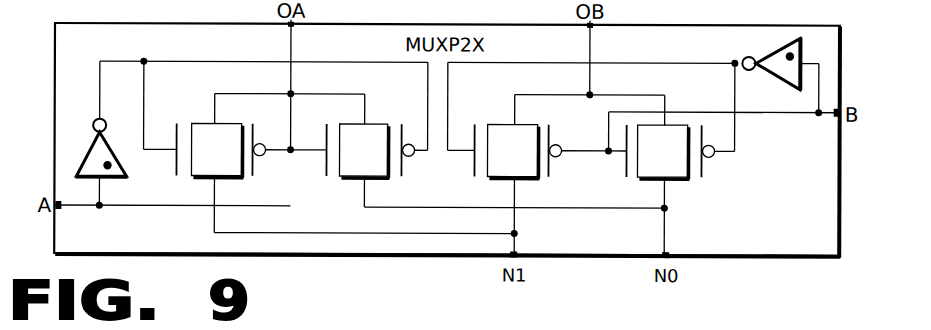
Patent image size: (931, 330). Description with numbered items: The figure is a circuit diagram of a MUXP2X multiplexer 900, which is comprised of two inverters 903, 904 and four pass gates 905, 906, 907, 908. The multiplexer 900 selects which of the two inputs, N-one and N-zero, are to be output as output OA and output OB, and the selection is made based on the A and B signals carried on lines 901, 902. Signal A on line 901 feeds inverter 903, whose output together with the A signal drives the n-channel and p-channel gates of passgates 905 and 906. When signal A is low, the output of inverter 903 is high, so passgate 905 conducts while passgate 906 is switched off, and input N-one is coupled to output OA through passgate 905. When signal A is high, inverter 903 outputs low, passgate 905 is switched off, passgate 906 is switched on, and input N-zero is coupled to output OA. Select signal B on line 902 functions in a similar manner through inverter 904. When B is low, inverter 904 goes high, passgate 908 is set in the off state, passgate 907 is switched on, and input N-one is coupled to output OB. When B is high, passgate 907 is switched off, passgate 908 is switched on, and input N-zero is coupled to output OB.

The MUXP2X multiplexer 900 is at (799, 249).
The line 901 is at (75, 207).
The line 902 is at (829, 114).
The inverter 903 is at (92, 137).
The inverter 904 is at (774, 50).
The passgate 905 is at (203, 158).
The passgate 906 is at (350, 158).
The passgate 907 is at (499, 158).
The passgate 908 is at (649, 158).